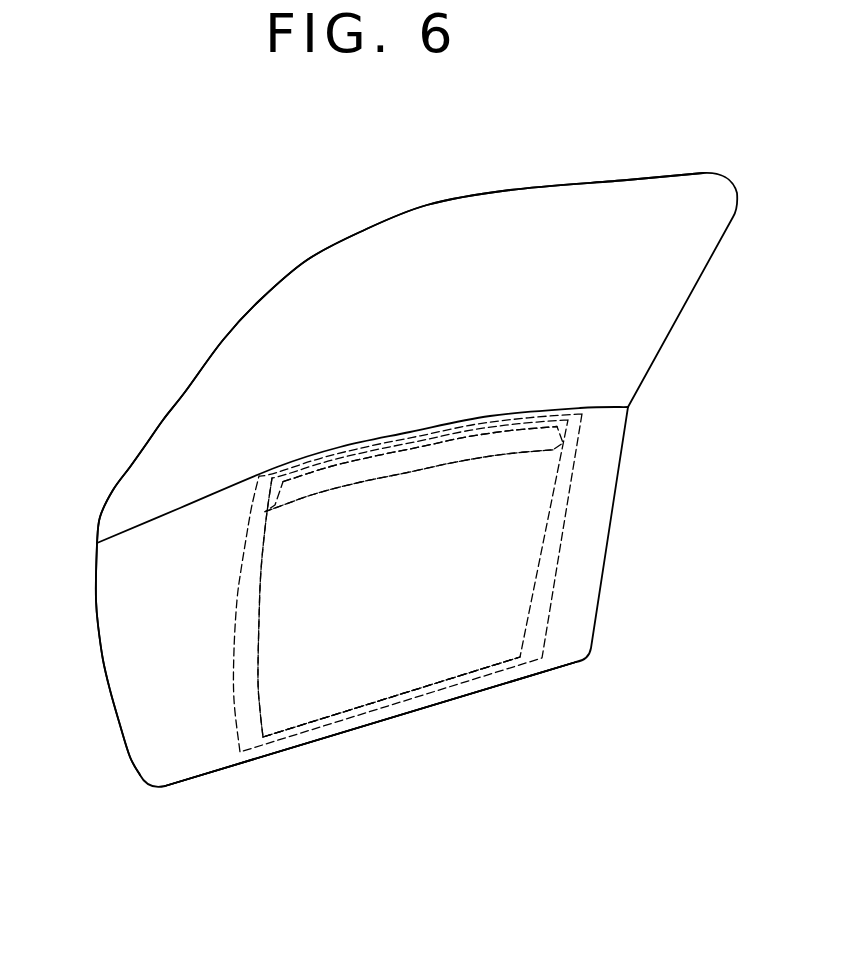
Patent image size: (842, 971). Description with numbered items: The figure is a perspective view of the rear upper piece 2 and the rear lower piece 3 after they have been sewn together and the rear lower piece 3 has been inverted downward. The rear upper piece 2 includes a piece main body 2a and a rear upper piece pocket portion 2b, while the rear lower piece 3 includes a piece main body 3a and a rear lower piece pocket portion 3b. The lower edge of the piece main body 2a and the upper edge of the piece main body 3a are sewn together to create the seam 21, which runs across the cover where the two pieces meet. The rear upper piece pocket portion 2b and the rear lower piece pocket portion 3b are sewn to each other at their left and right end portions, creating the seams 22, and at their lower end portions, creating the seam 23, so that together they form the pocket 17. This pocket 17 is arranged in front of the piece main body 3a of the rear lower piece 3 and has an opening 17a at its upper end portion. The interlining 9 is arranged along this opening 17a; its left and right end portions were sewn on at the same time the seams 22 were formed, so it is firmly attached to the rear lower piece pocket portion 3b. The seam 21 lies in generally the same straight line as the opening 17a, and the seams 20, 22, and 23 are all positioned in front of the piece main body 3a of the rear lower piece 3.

The rear upper piece 2 is at (259, 299).
The piece main body 2a is at (258, 348).
The rear upper piece pocket portion 2b is at (447, 640).
The rear lower piece 3 is at (96, 614).
The piece main body 3a is at (170, 662).
The rear lower piece pocket portion 3b is at (447, 640).
The interlining 9 is at (409, 456).
The pocket 17 is at (327, 688).
The opening 17a is at (403, 431).
The seam 20 is at (478, 434).
The seam 21 is at (184, 506).
The seams 22 is at (253, 645).
The seam 23 is at (383, 701).